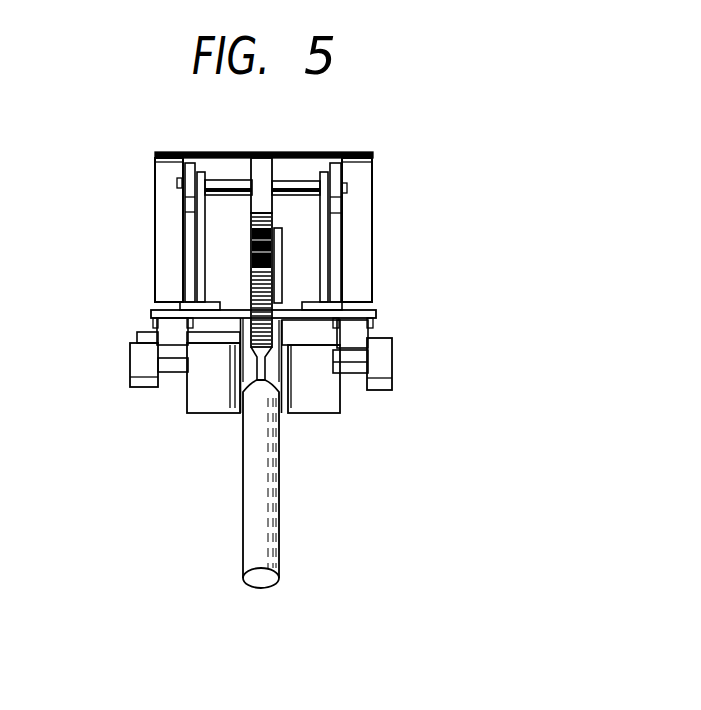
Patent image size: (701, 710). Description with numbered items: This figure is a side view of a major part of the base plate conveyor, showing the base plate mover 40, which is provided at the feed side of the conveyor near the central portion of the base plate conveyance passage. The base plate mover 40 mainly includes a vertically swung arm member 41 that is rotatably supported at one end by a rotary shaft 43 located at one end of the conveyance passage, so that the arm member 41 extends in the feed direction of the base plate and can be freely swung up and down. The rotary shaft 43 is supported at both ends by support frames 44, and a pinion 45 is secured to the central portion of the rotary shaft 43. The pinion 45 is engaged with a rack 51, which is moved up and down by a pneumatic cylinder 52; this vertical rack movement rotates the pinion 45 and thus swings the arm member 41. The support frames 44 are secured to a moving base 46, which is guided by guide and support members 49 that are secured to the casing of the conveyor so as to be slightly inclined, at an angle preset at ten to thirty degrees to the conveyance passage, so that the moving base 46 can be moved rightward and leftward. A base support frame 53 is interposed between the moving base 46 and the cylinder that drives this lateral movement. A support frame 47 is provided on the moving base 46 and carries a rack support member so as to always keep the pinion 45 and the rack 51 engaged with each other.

The base plate mover 40 is at (315, 152).
The arm member 41 is at (155, 238).
The rotary shaft 43 is at (222, 180).
The support frames 44 is at (205, 240).
The pinion 45 is at (250, 210).
The moving base 46 is at (376, 313).
The support frame 47 is at (286, 250).
The guide and support members 49 is at (392, 342).
The rack 51 is at (250, 282).
The pneumatic cylinder 52 is at (248, 498).
The base support frame 53 is at (207, 413).